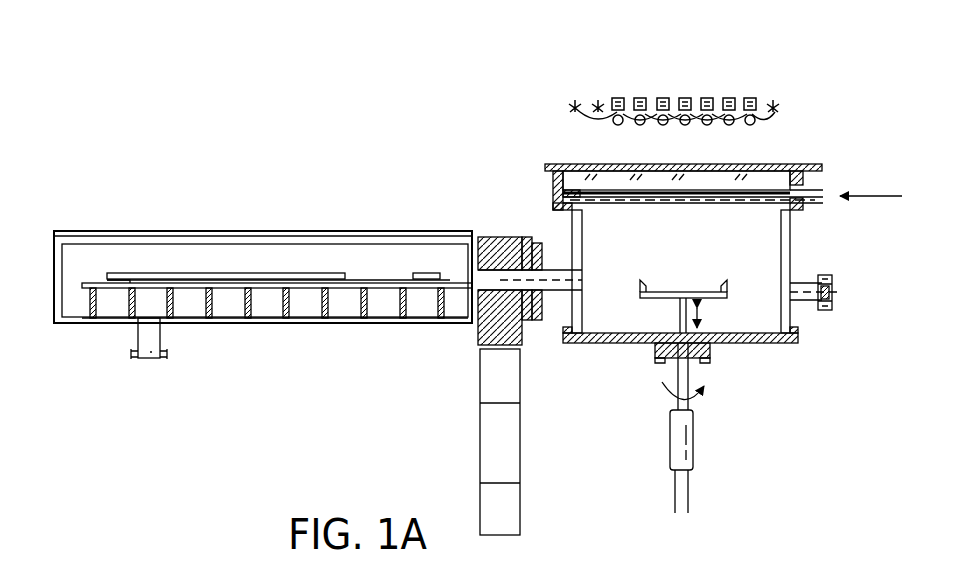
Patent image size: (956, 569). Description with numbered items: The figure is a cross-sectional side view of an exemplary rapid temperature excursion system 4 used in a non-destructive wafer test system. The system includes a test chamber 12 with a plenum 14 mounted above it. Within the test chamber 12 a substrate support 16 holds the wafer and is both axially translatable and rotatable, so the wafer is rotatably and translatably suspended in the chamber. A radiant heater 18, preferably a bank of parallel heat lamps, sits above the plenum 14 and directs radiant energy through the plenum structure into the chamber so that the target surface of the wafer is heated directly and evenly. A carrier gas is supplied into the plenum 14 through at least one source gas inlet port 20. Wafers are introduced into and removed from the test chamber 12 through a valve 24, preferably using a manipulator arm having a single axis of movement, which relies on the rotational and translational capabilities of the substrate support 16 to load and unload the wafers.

The rapid temperature excursion system 4 is at (280, 90).
The test chamber 12 is at (703, 269).
The plenum 14 is at (692, 185).
The substrate support 16 is at (650, 298).
The radiant heater 18 is at (683, 96).
The source gas inlet port 20 is at (817, 183).
The valve 24 is at (500, 237).